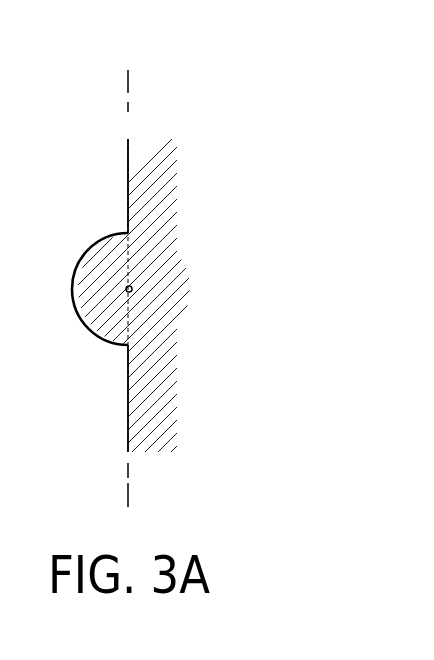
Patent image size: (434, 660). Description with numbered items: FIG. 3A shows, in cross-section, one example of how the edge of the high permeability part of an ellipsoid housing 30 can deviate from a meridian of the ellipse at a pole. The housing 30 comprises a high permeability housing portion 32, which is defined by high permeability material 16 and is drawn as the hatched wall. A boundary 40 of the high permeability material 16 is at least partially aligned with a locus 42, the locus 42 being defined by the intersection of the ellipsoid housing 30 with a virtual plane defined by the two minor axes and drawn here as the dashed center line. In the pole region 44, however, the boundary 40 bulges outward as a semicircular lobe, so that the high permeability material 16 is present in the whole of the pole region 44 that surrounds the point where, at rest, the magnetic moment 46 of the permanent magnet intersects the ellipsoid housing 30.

The high permeability material 16 is at (170, 283).
The housing 30 is at (118, 100).
The high permeability housing portion 32 is at (188, 153).
The boundary 40 is at (92, 252).
The locus 42 is at (130, 93).
The pole regions 44 is at (145, 263).
The magnetic moment 46 is at (132, 289).